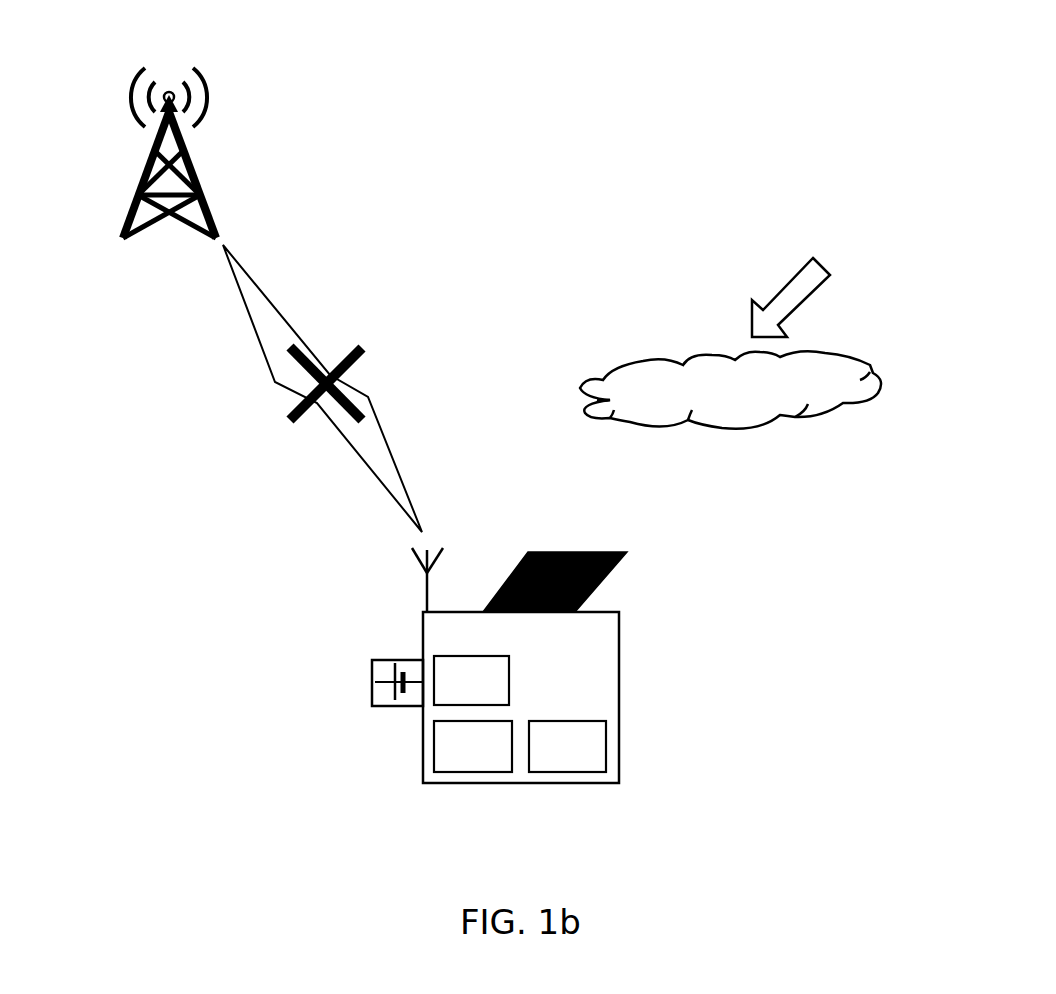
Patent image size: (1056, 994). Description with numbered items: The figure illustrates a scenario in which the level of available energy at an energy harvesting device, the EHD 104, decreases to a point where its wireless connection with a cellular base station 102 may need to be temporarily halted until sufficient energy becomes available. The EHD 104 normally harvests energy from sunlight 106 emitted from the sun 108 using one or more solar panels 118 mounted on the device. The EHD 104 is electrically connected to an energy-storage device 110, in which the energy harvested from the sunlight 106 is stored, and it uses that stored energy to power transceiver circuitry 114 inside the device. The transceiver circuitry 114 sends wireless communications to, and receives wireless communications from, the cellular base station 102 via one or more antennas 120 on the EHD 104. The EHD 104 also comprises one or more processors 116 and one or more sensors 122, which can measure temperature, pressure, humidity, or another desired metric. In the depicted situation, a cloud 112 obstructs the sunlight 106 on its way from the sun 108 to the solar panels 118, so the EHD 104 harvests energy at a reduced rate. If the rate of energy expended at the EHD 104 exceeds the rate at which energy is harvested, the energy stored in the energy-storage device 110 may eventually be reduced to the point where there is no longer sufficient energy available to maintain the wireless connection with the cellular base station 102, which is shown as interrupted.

The cellular base station 102 is at (197, 168).
The EHD 104 is at (562, 655).
The sunlight 106 is at (793, 280).
The sun 108 is at (878, 82).
The energy-storage device 110 is at (372, 682).
The cloud 112 is at (873, 368).
The transceiver circuitry 114 is at (454, 691).
The processors 116 is at (454, 757).
The solar panels 118 is at (620, 553).
The antennas 120 is at (427, 592).
The sensors 122 is at (549, 757).